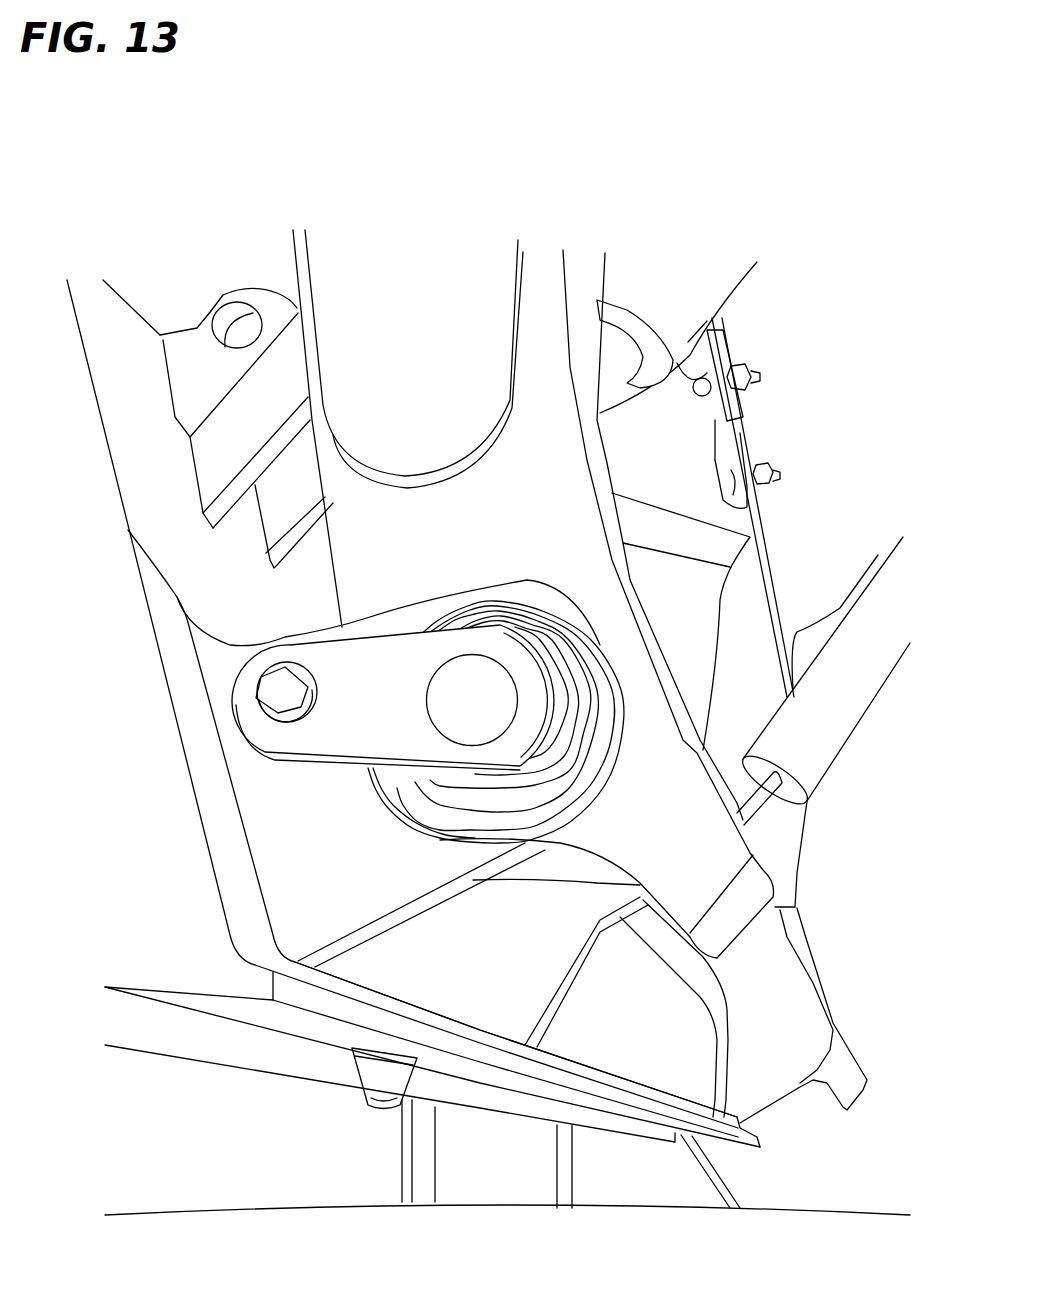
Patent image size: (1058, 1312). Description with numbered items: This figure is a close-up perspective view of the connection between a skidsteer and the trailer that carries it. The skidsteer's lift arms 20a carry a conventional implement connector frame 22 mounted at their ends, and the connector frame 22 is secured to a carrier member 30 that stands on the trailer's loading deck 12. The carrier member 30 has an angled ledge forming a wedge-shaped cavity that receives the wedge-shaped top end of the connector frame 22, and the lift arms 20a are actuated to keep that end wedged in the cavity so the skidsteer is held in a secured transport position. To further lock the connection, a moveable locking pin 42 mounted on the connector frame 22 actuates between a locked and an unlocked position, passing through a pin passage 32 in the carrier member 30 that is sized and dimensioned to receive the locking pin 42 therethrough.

The loading deck 12 is at (724, 1229).
The lift arms 20a is at (463, 383).
The implement connector frame 22 is at (188, 547).
The carrier member 30 is at (223, 1030).
The pin passage 32 is at (340, 1060).
The locking pin 42 is at (375, 1072).